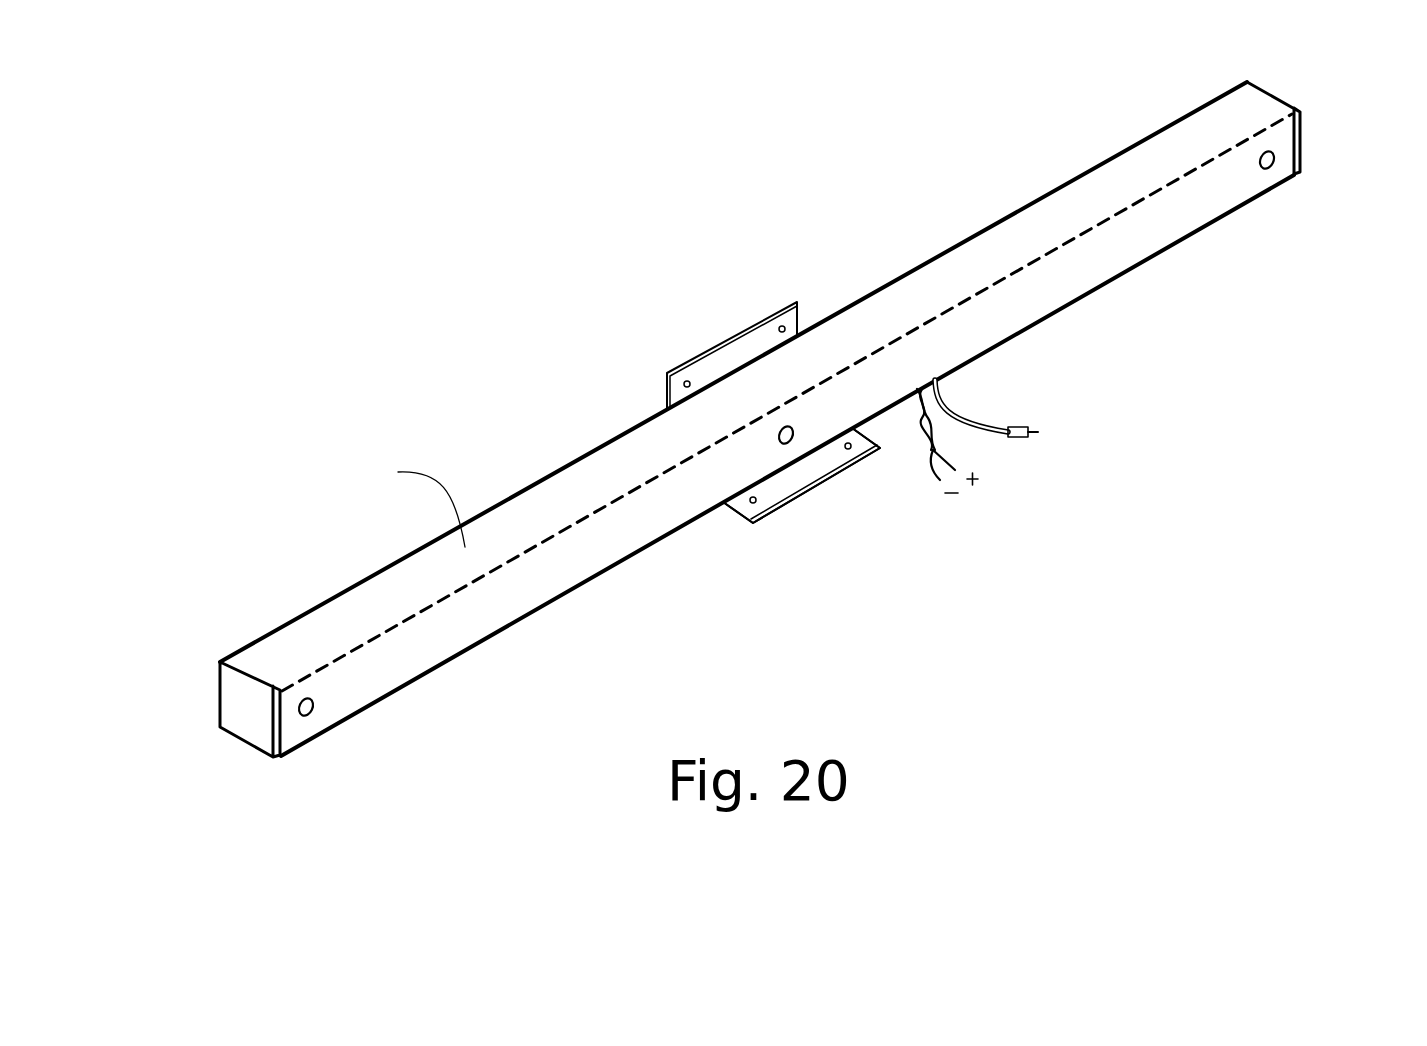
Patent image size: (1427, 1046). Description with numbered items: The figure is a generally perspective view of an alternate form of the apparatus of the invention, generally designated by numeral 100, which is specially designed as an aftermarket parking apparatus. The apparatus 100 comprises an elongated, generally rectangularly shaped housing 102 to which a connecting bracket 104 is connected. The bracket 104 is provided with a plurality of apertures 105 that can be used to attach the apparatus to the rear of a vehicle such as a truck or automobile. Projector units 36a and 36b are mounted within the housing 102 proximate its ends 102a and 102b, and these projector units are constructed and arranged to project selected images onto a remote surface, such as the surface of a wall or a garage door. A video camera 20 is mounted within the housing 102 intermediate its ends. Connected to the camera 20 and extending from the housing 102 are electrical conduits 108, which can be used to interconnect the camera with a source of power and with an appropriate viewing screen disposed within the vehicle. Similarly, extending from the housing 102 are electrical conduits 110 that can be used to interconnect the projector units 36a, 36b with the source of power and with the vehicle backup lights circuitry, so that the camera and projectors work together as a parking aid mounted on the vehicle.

The apparatus 100 is at (436, 303).
The housing 102 is at (987, 227).
The end of housing 102a is at (225, 655).
The end of housing 102b is at (1262, 197).
The projector unit 36a is at (307, 687).
The projector unit 36b is at (1266, 150).
The video camera 20 is at (787, 417).
The apertures 105 is at (684, 385).
The connecting bracket 104 is at (767, 517).
The electrical conduits 108 is at (968, 422).
The electrical conduits 110 is at (952, 458).